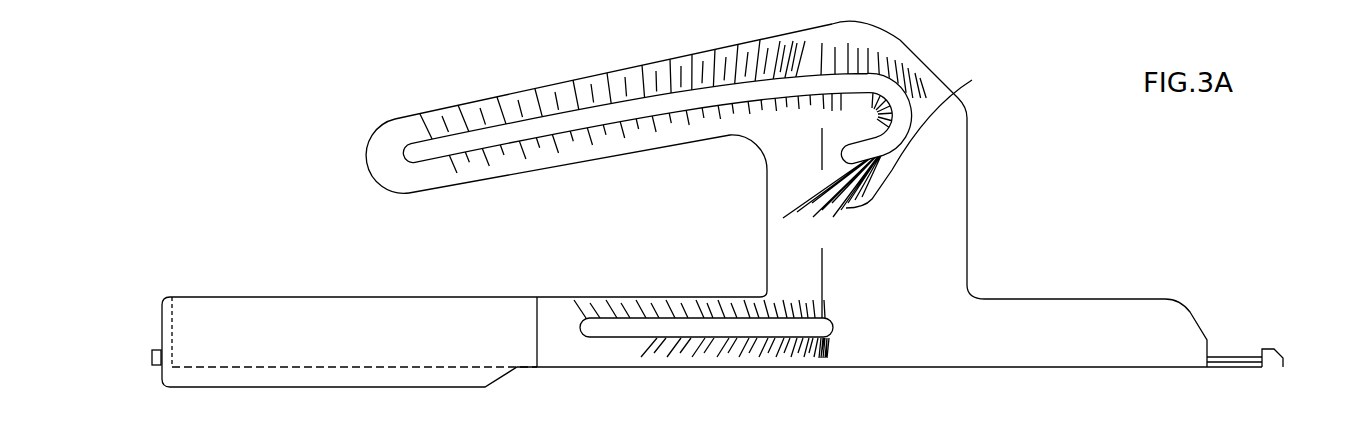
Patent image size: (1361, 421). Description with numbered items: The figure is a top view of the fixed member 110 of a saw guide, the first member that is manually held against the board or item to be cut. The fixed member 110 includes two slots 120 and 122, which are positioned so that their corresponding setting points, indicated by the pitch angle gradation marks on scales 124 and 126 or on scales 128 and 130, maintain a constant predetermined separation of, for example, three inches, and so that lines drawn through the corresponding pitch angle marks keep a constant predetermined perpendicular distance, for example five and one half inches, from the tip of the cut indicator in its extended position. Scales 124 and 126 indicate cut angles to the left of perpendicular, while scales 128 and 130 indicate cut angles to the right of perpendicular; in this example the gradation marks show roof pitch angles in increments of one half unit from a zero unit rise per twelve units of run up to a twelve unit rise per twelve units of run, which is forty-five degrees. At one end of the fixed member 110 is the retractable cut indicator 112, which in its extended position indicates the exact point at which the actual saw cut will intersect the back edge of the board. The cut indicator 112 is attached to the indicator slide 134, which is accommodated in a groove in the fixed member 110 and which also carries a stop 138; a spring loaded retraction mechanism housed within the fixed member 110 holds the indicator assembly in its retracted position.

The fixed member 110 is at (938, 243).
The retractable cut indicator 112 is at (1272, 360).
The slot 120 is at (628, 327).
The slot 122 is at (523, 127).
The scale 124 is at (670, 265).
The scale 126 is at (617, 148).
The scale 128 is at (728, 368).
The scale 130 is at (917, 55).
The indicator slide 134 is at (1238, 366).
The stop 138 is at (152, 357).